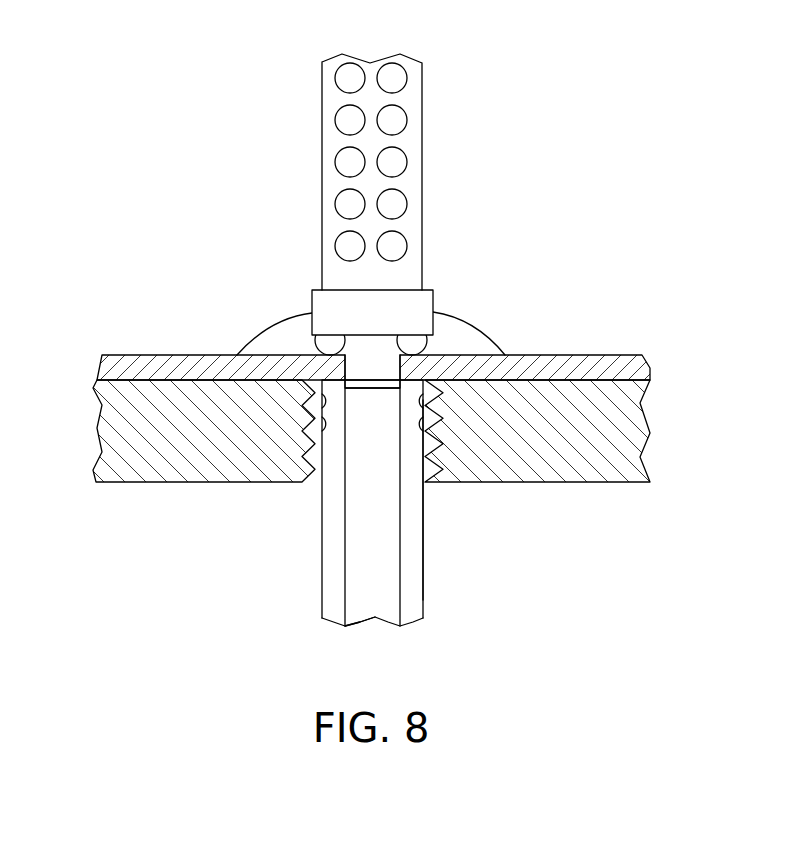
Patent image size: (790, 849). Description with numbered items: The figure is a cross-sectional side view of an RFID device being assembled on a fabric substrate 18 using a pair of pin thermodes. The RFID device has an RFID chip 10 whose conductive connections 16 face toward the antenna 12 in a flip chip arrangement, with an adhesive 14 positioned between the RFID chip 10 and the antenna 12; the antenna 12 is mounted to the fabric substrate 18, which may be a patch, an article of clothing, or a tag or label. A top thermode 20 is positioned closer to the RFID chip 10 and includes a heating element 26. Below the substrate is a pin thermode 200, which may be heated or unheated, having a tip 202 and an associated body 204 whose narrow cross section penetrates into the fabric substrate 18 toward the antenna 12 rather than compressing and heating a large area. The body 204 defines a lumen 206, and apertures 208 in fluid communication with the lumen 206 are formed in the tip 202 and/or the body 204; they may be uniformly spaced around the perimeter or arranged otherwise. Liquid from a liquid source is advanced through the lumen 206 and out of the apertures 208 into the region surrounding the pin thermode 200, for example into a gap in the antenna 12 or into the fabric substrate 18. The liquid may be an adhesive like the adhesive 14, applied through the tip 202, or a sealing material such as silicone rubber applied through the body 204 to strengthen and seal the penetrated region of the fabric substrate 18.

The RFID chip 10 is at (434, 293).
The antenna 12 is at (125, 355).
The adhesive 14 is at (237, 354).
The conductive connections 16 is at (312, 342).
The fabric substrate 18 is at (155, 482).
The top thermode 20 is at (322, 98).
The heating element 26 is at (407, 163).
The pin thermode 200 is at (321, 564).
The tip 202 is at (356, 389).
The body 204 is at (424, 578).
The lumen 206 is at (357, 607).
The aperture 208 is at (322, 425).